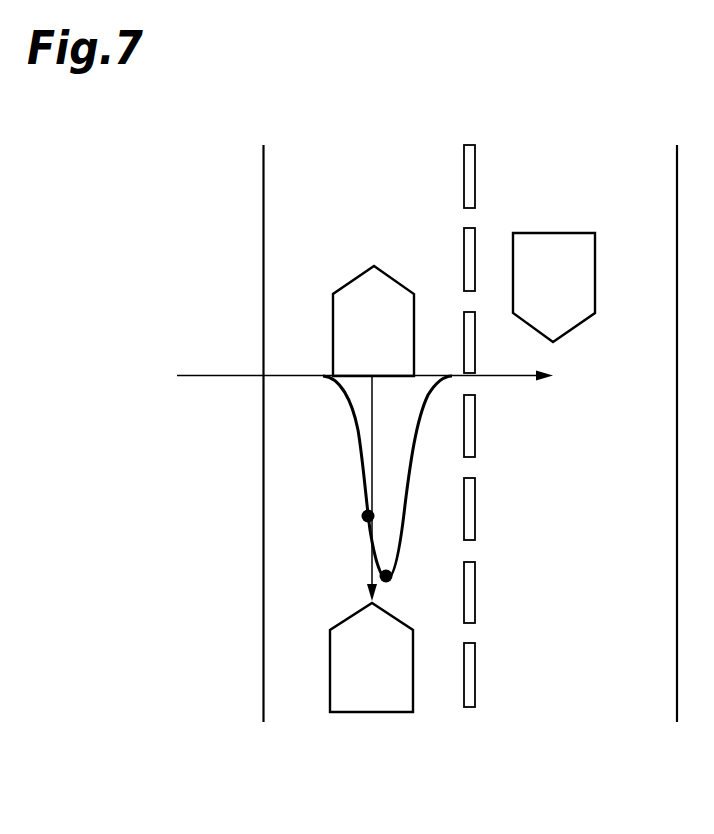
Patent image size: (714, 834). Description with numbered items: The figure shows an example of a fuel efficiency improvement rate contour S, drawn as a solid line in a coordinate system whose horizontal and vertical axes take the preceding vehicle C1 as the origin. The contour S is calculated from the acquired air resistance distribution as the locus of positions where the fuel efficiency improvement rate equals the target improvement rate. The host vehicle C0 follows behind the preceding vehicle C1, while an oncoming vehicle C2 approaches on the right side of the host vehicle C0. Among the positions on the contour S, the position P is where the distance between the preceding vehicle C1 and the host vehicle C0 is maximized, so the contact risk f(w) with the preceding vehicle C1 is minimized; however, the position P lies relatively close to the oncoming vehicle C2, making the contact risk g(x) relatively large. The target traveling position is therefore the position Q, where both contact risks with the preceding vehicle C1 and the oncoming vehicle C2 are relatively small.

The preceding vehicle C1 is at (347, 283).
The oncoming vehicle C2 is at (578, 325).
The host vehicle C0 is at (345, 618).
The fuel efficiency improvement rate contour S is at (358, 445).
The target traveling position Q is at (362, 515).
The position of maximized distance P is at (391, 581).